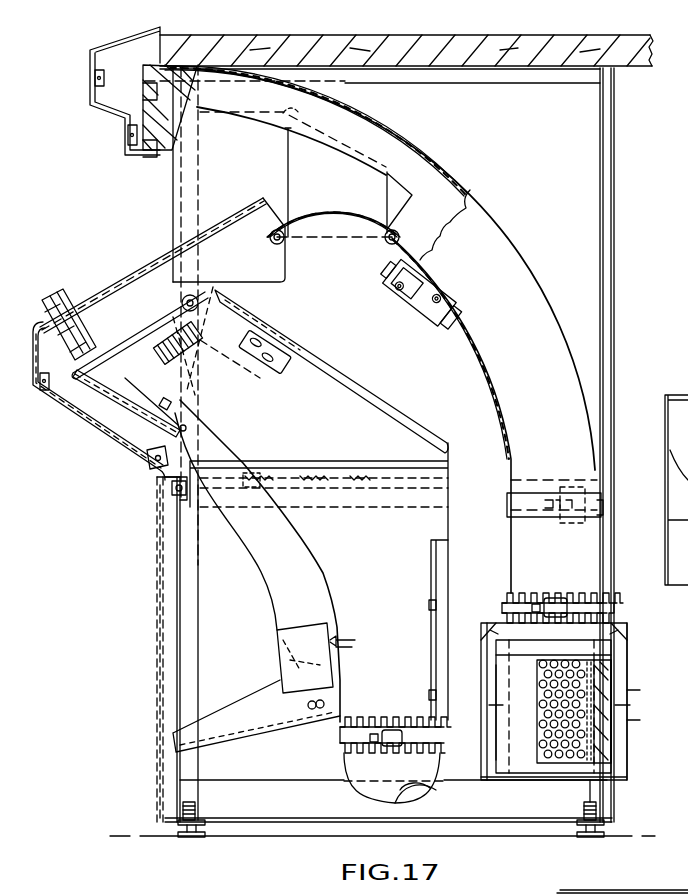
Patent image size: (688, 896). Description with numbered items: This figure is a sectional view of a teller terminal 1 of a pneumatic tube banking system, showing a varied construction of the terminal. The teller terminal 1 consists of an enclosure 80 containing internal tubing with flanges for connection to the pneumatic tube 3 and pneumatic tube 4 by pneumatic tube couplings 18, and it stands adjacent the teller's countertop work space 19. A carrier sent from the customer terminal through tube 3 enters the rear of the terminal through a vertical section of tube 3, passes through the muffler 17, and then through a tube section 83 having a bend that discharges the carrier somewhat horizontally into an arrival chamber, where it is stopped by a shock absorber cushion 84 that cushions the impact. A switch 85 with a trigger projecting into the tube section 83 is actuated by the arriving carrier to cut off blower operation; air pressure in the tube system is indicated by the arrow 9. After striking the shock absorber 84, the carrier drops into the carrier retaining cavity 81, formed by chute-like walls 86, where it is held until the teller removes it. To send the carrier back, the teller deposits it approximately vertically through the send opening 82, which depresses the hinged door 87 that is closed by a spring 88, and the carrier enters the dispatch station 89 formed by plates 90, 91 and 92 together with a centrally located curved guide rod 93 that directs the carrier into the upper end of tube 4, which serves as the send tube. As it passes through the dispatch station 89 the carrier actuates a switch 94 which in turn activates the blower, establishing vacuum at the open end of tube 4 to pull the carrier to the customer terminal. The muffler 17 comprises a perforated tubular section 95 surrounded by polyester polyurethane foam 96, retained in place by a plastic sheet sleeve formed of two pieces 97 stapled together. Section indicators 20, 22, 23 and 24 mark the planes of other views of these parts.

The teller terminal 1 is at (125, 605).
The pneumatic tube 3 is at (530, 565).
The pneumatic tube 4 is at (342, 790).
The air pressure 9 is at (486, 745).
The muffler 17 is at (520, 762).
The pneumatic tube coupling 18 is at (436, 180).
The countertop work space 19 is at (412, 37).
The section line / mounting bracket 20 is at (152, 14).
The section line / hopper block 22 is at (238, 290).
The section line / side bracket 23 is at (178, 443).
The section line / filter 24 is at (470, 685).
The enclosure 80 is at (158, 706).
The cavity 81 is at (100, 300).
The opening 82 is at (123, 365).
The tube section 83 is at (505, 290).
The shock absorber cushion 84 is at (168, 138).
The switch 85 is at (418, 290).
The chute-like walls 86 is at (163, 275).
The hinged door 87 is at (180, 370).
The spring 88 is at (213, 357).
The dispatch station 89 is at (300, 565).
The plate 90 is at (398, 590).
The plate 91 is at (433, 665).
The plate 92 is at (352, 420).
The curved guide rod 93 is at (322, 585).
The switch 94 is at (347, 640).
The perforated tubular section 95 is at (602, 672).
The polyester polyurethane foam 96 is at (602, 745).
The sleeve pieces 97 is at (520, 655).